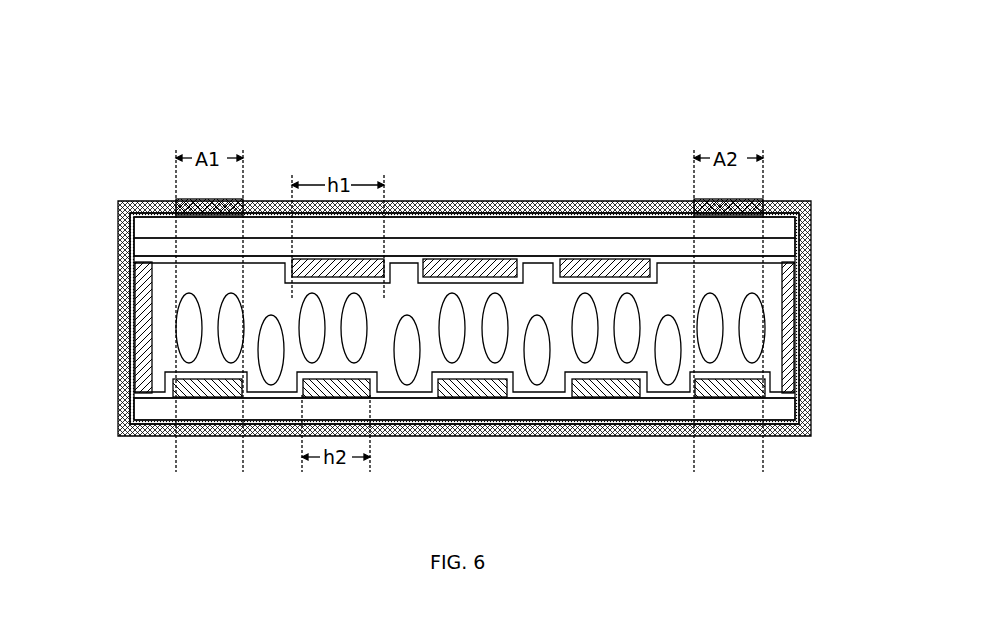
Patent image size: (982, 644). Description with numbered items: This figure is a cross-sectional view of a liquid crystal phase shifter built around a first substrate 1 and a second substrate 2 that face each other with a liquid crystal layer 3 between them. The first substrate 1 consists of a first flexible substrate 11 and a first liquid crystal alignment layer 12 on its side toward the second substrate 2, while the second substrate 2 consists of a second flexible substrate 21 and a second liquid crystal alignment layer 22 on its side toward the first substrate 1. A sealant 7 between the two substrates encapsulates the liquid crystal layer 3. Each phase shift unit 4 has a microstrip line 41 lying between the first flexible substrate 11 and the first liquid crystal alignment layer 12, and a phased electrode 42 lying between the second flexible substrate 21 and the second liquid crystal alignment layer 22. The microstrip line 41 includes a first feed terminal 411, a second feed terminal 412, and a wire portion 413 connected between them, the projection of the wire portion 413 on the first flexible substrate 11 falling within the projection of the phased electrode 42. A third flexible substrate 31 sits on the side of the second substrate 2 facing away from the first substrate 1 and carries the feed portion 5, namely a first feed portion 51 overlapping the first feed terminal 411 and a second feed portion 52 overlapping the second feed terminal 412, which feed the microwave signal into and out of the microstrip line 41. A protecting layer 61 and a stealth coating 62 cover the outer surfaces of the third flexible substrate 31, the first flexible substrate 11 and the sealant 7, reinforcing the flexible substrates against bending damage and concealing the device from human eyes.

The first substrate 1 is at (513, 388).
The first flexible substrate 11 is at (782, 412).
The first liquid crystal alignment layer 12 is at (780, 393).
The second substrate 2 is at (511, 255).
The second flexible substrate 21 is at (778, 248).
The second liquid crystal alignment layer 22 is at (780, 261).
The liquid crystal layer 3 is at (760, 333).
The third flexible substrate 31 is at (783, 224).
The phase shift unit 4 is at (397, 380).
The microstrip line 41 is at (411, 411).
The first feed terminal 411 is at (210, 392).
The second feed terminal 412 is at (740, 392).
The wire portion 413 is at (600, 388).
The phased electrode 42 is at (287, 268).
The feed portion 5 is at (469, 134).
The first feed portion 51 is at (243, 200).
The second feed portion 52 is at (720, 205).
The protecting layer 61 is at (128, 388).
The stealth coating 62 is at (128, 363).
The sealant 7 is at (787, 300).